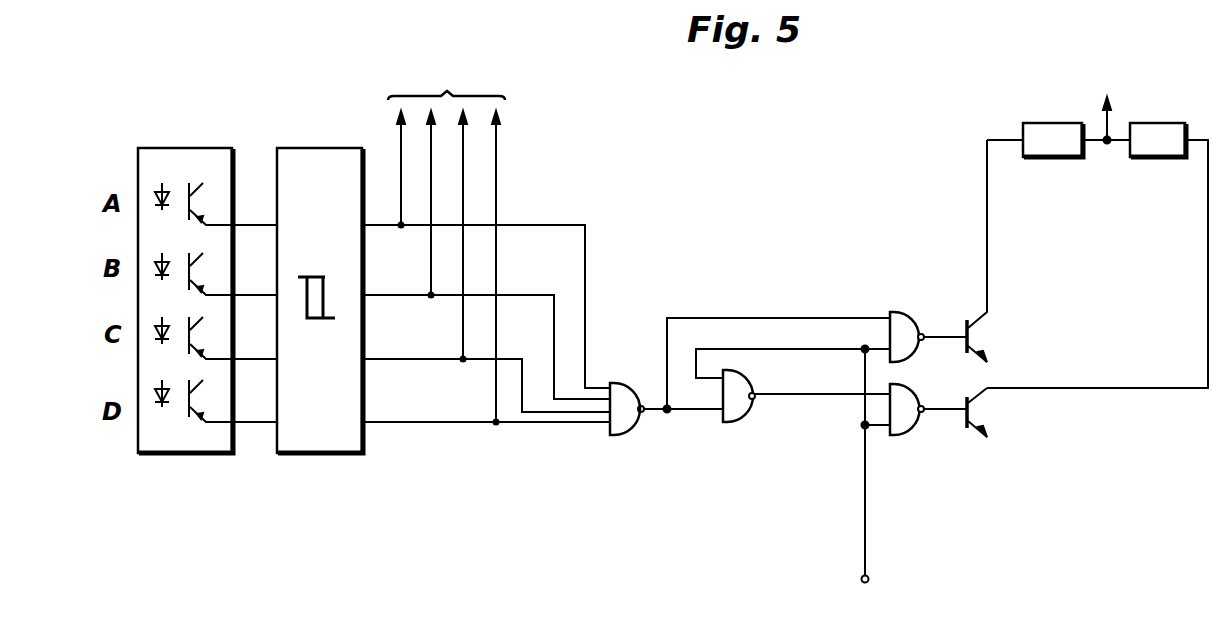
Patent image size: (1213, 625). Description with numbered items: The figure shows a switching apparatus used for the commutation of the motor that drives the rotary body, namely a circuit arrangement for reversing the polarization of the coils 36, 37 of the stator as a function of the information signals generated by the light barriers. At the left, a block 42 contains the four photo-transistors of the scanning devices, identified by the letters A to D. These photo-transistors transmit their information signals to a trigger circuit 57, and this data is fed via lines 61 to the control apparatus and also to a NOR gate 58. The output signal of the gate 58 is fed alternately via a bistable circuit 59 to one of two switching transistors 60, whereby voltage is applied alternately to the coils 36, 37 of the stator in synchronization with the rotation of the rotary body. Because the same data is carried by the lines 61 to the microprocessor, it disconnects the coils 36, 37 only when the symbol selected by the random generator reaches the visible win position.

The optocoupler input unit 42 is at (175, 152).
The trigger circuit 57 is at (316, 152).
The lines 61 is at (535, 156).
The NOR gate 58 is at (623, 383).
The bistable circuit 59 is at (796, 252).
The switching transistor 60 is at (990, 335).
The coil 36 is at (1055, 124).
The coil 37 is at (1155, 124).